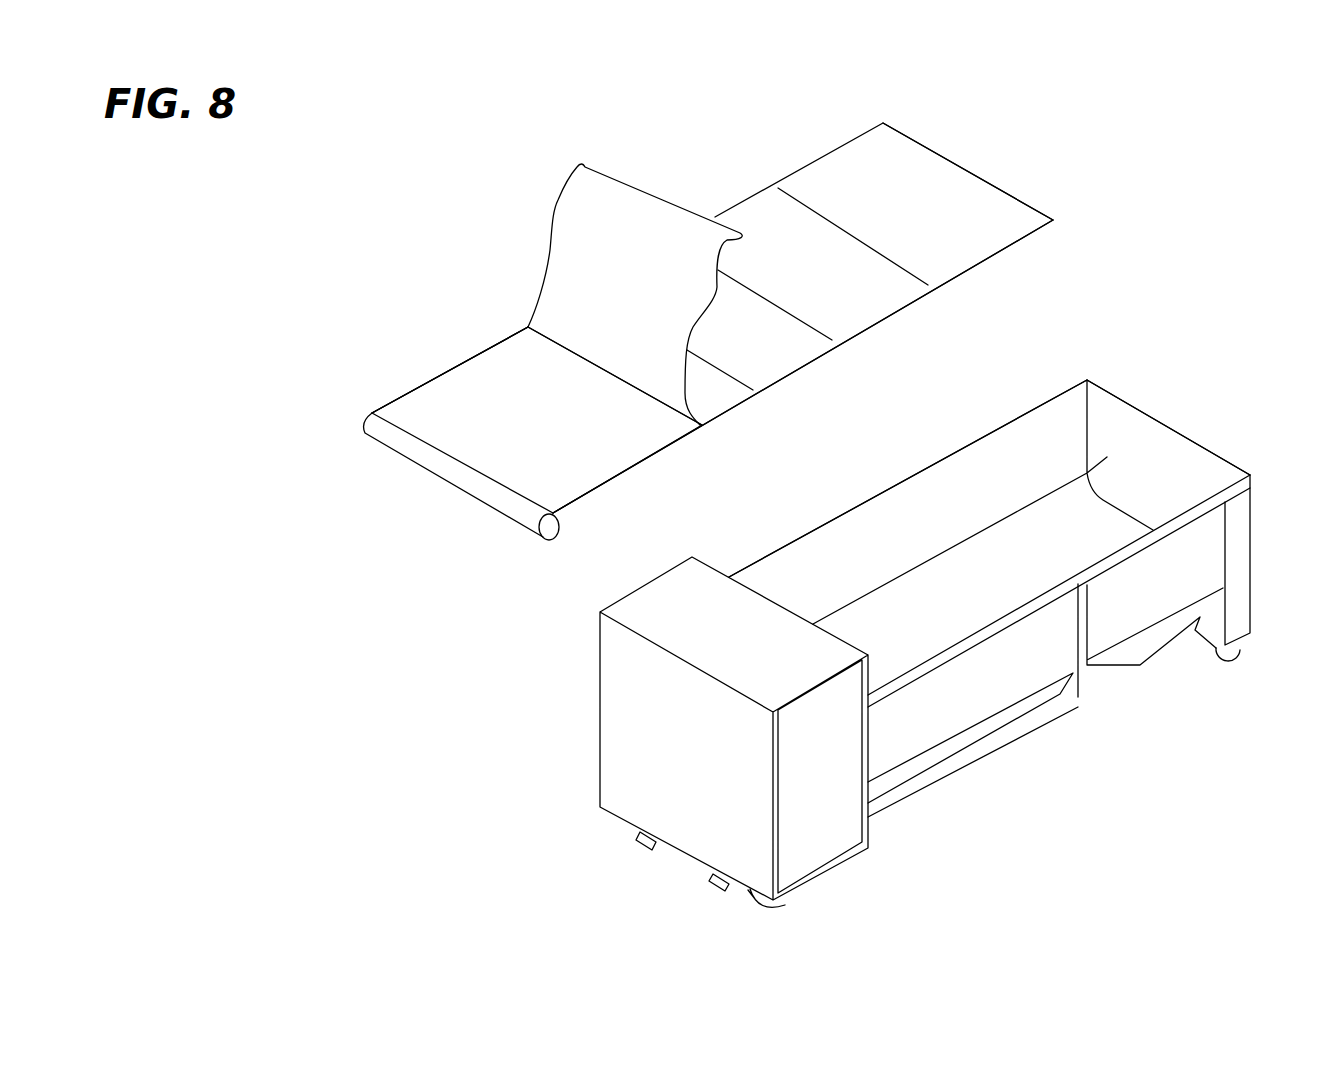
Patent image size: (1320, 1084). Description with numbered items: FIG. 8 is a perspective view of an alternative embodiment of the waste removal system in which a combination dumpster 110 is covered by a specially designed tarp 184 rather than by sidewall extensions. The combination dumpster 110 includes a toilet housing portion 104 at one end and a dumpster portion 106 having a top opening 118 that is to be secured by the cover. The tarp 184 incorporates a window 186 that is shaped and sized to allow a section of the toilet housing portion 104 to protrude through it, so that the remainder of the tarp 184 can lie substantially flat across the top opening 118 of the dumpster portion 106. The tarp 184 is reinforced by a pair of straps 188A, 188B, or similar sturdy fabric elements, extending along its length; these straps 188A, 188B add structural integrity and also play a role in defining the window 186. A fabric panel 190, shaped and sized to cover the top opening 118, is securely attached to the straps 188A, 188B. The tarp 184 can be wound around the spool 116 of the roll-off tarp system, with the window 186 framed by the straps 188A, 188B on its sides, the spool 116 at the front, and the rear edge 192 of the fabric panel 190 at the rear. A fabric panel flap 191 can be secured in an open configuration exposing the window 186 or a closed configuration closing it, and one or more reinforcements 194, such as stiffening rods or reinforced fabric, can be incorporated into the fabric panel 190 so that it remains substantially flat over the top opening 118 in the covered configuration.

The toilet housing portion 104 is at (663, 695).
The dumpster portion 106 is at (1190, 490).
The combination dumpster 110 is at (914, 612).
The spool 116 is at (468, 482).
The top opening 118 is at (965, 457).
The tarp 184 is at (452, 198).
The window 186 is at (507, 408).
The strap 188A is at (652, 455).
The strap 188B is at (505, 338).
The fabric panel 190 is at (783, 232).
The fabric panel flap 191 is at (597, 218).
The rear edge 192 is at (610, 383).
The reinforcement 194 is at (855, 250).